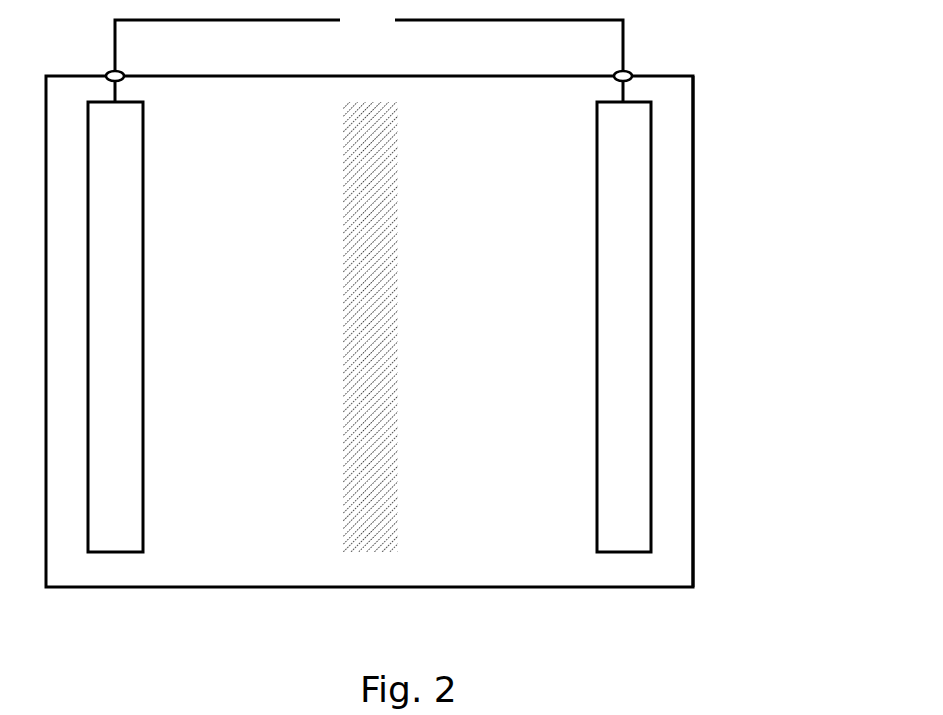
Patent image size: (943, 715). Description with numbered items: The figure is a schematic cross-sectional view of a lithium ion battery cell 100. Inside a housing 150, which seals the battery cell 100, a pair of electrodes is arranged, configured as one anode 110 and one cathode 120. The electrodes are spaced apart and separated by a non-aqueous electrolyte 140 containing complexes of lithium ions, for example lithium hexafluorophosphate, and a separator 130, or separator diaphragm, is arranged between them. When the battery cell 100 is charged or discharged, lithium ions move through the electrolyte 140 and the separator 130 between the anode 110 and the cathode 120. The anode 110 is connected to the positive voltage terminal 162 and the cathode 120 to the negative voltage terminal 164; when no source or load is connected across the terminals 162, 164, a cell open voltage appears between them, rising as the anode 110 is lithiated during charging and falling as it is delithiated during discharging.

The battery cell 100 is at (700, 133).
The anode 110 is at (113, 558).
The cathode 120 is at (623, 558).
The separator 130 is at (400, 547).
The electrolyte 140 is at (233, 465).
The housing 150 is at (694, 396).
The positive voltage terminal 162 is at (107, 71).
The negative voltage terminal 164 is at (632, 71).